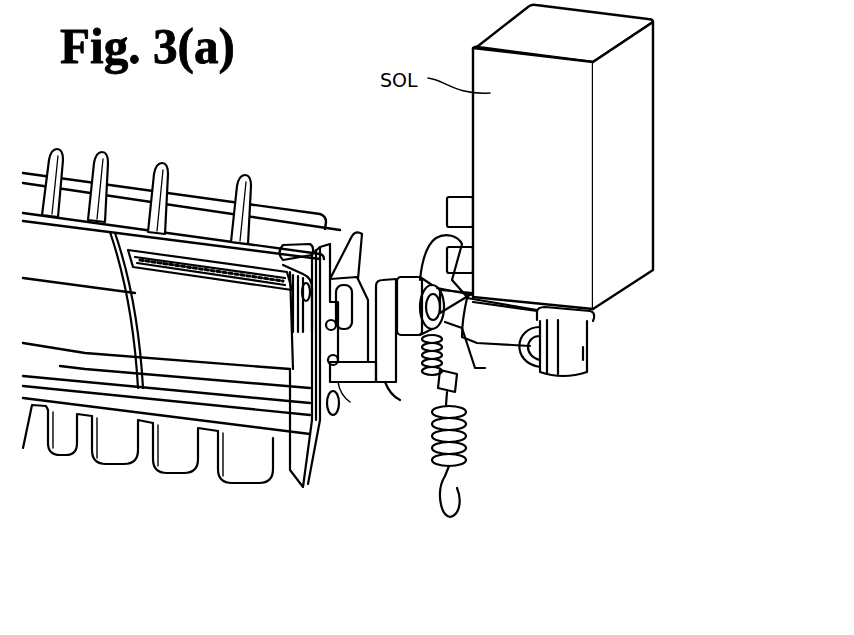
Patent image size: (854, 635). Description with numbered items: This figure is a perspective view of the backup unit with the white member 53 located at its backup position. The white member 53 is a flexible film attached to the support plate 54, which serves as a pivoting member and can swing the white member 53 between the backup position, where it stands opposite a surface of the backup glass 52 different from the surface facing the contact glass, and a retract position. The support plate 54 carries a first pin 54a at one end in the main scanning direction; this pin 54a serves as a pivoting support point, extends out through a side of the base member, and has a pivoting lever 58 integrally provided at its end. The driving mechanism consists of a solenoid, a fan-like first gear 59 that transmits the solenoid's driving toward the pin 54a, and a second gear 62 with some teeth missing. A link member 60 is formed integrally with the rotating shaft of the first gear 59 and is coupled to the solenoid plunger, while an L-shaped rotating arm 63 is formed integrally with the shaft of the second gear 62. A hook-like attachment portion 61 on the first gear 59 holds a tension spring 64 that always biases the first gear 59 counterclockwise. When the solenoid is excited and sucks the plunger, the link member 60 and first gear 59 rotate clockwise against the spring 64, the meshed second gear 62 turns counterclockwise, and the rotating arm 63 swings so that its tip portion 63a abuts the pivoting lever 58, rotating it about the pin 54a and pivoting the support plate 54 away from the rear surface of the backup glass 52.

The backup glass 52 is at (103, 367).
The white member 53 is at (195, 342).
The support plate 54 is at (305, 487).
The first pin 54a is at (343, 277).
The pivoting lever 58 is at (355, 345).
The first gear 59 is at (447, 340).
The link member 60 is at (530, 363).
The attachment portion 61 is at (457, 395).
The second gear 62 is at (412, 290).
The rotating arm 63 is at (408, 378).
The tip portion 63a is at (352, 372).
The tension spring 64 is at (467, 470).